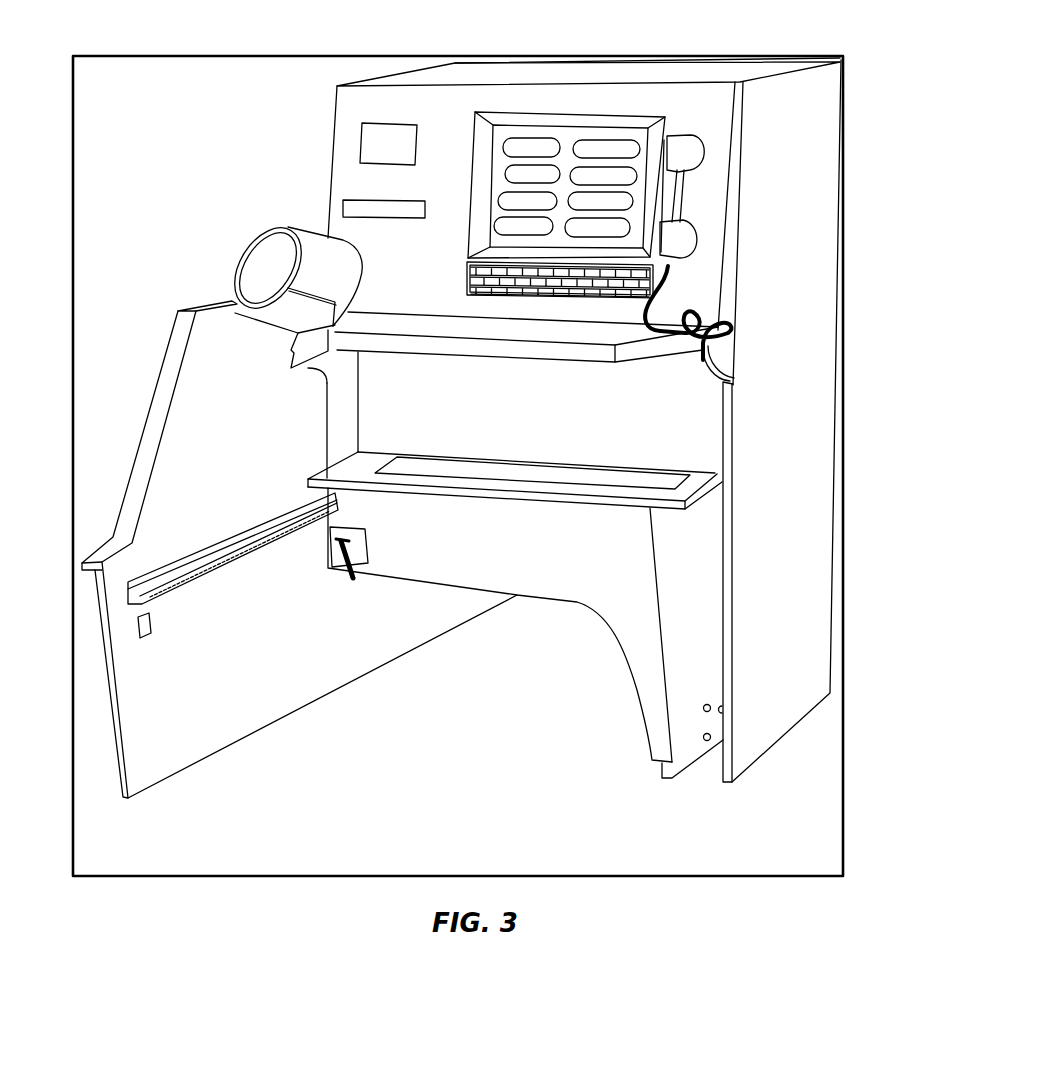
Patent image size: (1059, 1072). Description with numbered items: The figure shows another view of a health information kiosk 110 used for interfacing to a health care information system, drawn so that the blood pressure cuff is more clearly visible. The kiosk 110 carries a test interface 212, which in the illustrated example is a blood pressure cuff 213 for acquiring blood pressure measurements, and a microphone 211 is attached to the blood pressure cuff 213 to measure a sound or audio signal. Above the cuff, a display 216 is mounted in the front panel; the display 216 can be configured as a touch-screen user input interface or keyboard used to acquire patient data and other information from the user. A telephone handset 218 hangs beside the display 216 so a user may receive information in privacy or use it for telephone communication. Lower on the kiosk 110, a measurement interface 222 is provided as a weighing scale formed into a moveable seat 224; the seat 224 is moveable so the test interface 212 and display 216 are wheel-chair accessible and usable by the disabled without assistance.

The health information kiosk 110 is at (617, 52).
The microphone 211 is at (318, 309).
The test interface 212 is at (362, 276).
The blood pressure cuff 213 is at (340, 243).
The display 216 is at (597, 113).
The telephone handset 218 is at (700, 240).
The measurement interface 222 is at (687, 488).
The moveable seat 224 is at (657, 510).